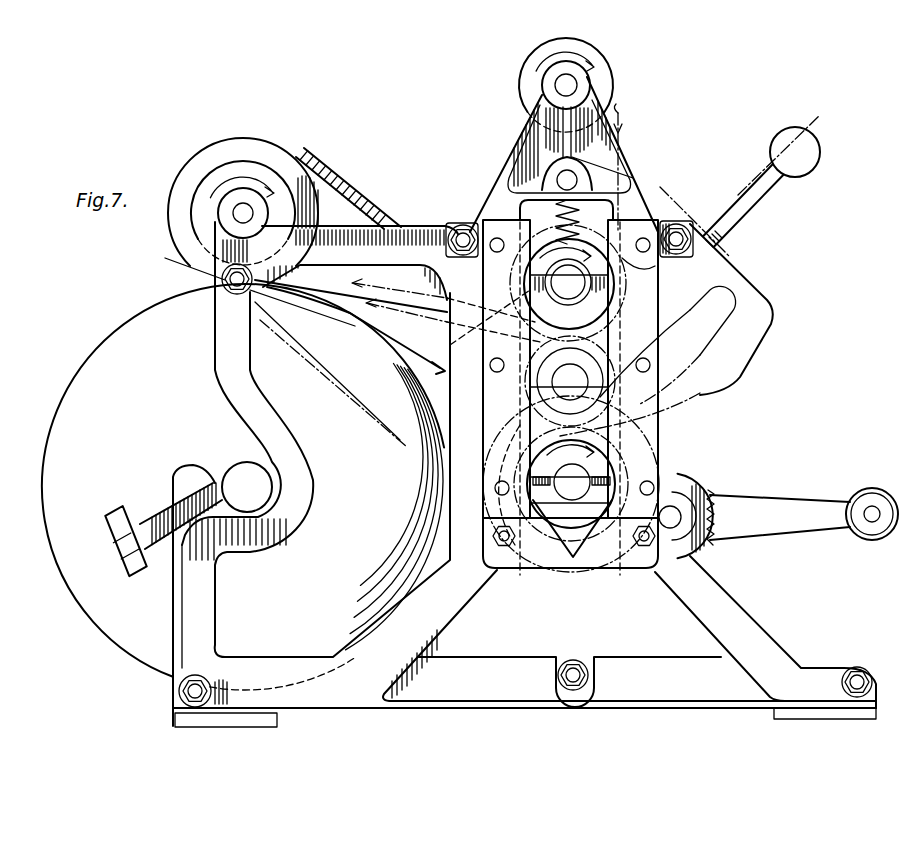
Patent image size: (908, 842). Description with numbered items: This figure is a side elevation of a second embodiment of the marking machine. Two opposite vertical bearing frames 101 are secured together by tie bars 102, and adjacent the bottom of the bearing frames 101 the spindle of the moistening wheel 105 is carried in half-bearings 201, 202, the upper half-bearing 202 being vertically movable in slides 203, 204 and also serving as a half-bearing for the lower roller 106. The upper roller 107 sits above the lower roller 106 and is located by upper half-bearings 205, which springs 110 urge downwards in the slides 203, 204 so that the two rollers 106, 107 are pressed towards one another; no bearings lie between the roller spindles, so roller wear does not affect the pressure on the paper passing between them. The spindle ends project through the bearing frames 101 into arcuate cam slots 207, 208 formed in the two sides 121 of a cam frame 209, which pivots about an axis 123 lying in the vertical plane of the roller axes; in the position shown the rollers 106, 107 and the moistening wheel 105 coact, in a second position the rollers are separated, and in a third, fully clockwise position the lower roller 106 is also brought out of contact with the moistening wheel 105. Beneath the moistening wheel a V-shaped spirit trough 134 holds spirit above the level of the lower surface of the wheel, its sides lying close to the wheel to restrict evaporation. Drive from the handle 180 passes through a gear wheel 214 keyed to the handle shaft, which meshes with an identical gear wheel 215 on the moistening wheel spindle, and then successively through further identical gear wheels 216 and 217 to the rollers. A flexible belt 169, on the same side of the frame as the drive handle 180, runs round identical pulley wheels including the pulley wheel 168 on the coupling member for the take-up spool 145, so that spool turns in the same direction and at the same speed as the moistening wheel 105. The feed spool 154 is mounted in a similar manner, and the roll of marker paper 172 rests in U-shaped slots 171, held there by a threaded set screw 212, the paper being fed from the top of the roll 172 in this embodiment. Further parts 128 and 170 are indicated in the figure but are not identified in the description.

The bearing frames 101 is at (445, 336).
The tie bars 102 is at (463, 229).
The moistening wheel 105 is at (490, 464).
The lower roller 106 is at (527, 405).
The upper roller 107 is at (527, 270).
The springs 110 is at (528, 207).
The sides of cam frame 121 is at (762, 278).
The axis 123 is at (555, 180).
The hand lever 128 is at (731, 228).
The V-shaped spirit trough 134 is at (585, 556).
The take-up spool 145 is at (280, 175).
The feed spool 154 is at (517, 96).
The pulley wheel 168 is at (303, 186).
The flexible belt drive 169 is at (340, 199).
The tape path 170 is at (622, 122).
The U-shaped slots 171 is at (198, 475).
The marker paper roll 172 is at (133, 322).
The drive handle 180 is at (816, 500).
The half-bearing 201 is at (543, 492).
The upper half-bearing 202 is at (515, 436).
The slide 203 is at (490, 349).
The slide 204 is at (648, 422).
The upper half-bearings 205 is at (532, 279).
The arcuate cam slot 207 is at (660, 262).
The arcuate cam slot 208 is at (735, 343).
The cam frame 209 is at (782, 326).
The threaded set screw 212 is at (157, 508).
The gear wheel 214 is at (707, 492).
The gear wheel 215 is at (649, 450).
The gear wheel 216 is at (617, 336).
The gear wheel 217 is at (624, 282).